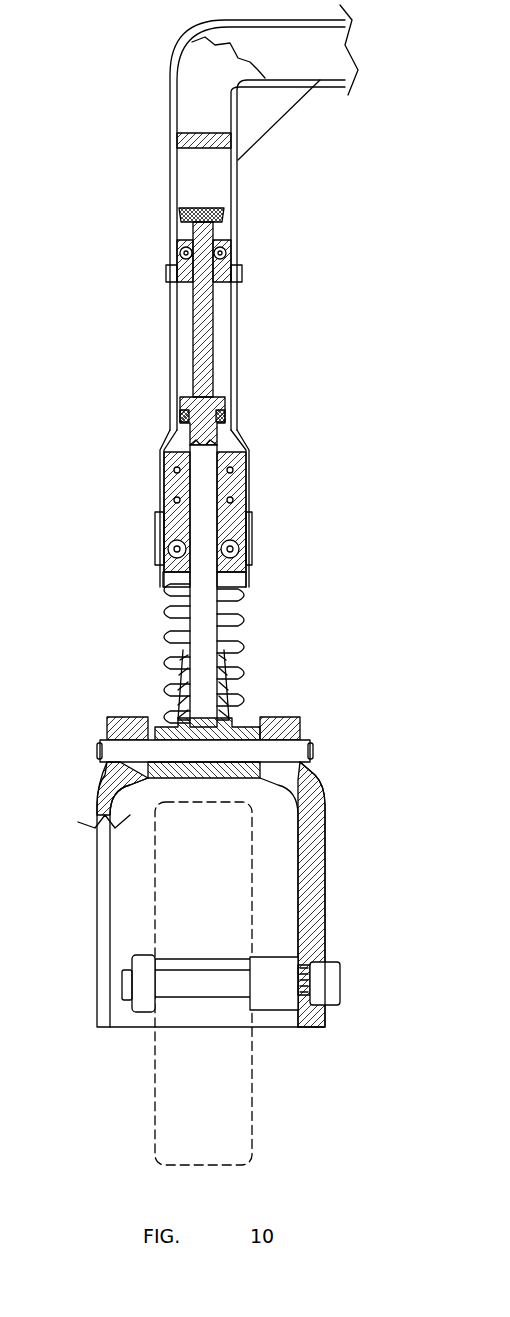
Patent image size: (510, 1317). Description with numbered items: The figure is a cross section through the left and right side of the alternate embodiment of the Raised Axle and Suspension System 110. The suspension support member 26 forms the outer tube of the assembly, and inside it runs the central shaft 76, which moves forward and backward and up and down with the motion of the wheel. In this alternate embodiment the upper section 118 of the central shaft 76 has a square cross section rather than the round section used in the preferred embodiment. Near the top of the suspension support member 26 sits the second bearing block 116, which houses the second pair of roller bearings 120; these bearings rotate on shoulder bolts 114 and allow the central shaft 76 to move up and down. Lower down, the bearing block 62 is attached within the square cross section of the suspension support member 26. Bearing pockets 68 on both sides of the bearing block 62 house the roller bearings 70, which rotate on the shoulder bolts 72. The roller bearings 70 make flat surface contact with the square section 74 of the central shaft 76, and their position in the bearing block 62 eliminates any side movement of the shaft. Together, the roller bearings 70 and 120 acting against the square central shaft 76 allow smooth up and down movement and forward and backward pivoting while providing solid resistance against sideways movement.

The Raised Axle and Suspension System 110 is at (152, 170).
The shoulder bolts 114 is at (190, 243).
The second pair of roller bearings 120 is at (180, 255).
The suspension support member 26 is at (172, 316).
The second bearing block 116 is at (233, 295).
The upper section 118 is at (195, 347).
The central shaft 76 is at (215, 372).
The bearing block 62 is at (172, 483).
The square section 74 is at (248, 480).
The roller bearings 70 is at (162, 545).
The bearing pockets 68 is at (165, 550).
The shoulder bolts 72 is at (160, 580).